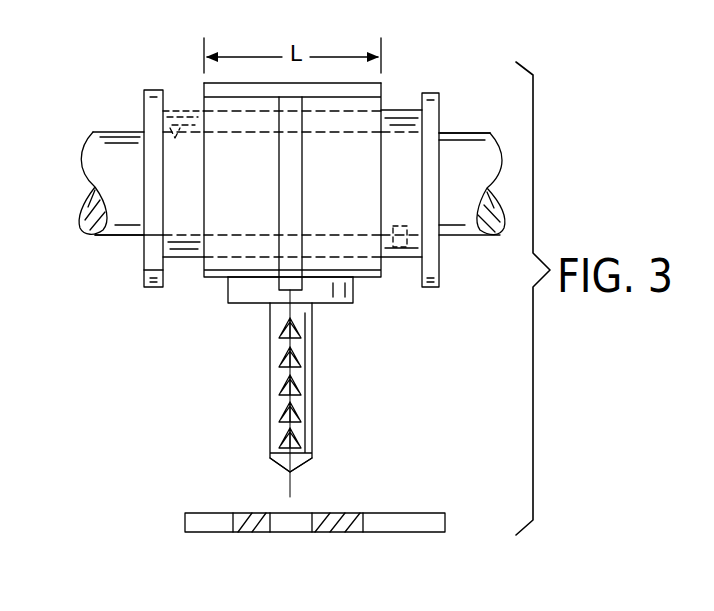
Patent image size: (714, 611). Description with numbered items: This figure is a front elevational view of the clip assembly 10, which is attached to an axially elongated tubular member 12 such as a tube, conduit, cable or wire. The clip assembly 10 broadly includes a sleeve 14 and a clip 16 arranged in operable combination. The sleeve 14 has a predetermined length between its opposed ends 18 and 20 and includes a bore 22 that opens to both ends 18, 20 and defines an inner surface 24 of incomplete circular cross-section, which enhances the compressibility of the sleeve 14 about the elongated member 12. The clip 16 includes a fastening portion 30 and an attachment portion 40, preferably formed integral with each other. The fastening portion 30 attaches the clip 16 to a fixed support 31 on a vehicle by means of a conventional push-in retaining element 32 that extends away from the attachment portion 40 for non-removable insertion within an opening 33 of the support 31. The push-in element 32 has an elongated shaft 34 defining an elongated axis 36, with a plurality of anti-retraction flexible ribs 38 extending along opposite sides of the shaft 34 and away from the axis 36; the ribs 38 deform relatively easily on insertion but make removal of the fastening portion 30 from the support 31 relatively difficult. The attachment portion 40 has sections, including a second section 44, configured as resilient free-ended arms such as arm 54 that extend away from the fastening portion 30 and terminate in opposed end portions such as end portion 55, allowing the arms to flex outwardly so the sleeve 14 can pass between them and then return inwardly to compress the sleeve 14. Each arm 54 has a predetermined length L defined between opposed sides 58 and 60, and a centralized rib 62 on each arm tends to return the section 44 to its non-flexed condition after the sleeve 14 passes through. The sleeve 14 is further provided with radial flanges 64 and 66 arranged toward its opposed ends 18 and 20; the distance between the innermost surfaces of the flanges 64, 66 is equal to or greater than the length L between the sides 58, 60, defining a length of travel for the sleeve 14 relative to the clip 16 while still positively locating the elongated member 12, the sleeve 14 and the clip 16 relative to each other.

The clip assembly 10 is at (97, 66).
The elongated tubular member 12 is at (463, 236).
The sleeve 14 is at (151, 87).
The clip 16 is at (357, 306).
The sleeve end 18 is at (142, 275).
The sleeve end 20 is at (438, 100).
The bore 22 is at (172, 108).
The inner surface 24 is at (404, 252).
The fastening portion 30 is at (250, 388).
The support 31 is at (400, 520).
The push-in retaining element 32 is at (302, 430).
The opening 33 is at (307, 520).
The shaft 34 is at (302, 345).
The elongated axis 36 is at (287, 473).
The anti-retraction ribs 38 is at (300, 408).
The attachment portion 40 is at (202, 290).
The second section 44 is at (250, 252).
The arm 54 is at (350, 183).
The end portion 55 is at (378, 107).
The side 58 is at (200, 268).
The side 60 is at (380, 207).
The centralized rib 62 is at (290, 196).
The radial flange 64 is at (150, 250).
The radial flange 66 is at (430, 157).